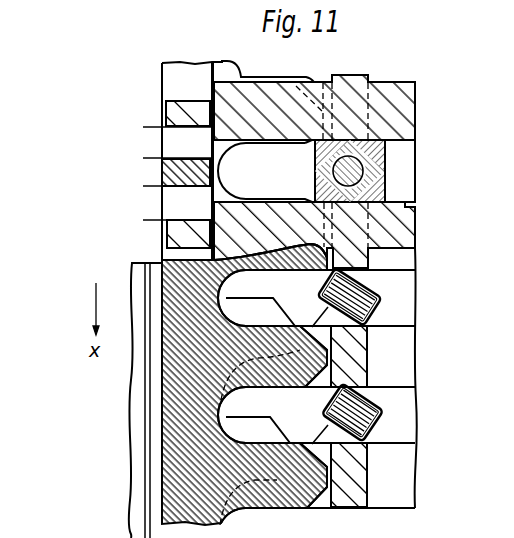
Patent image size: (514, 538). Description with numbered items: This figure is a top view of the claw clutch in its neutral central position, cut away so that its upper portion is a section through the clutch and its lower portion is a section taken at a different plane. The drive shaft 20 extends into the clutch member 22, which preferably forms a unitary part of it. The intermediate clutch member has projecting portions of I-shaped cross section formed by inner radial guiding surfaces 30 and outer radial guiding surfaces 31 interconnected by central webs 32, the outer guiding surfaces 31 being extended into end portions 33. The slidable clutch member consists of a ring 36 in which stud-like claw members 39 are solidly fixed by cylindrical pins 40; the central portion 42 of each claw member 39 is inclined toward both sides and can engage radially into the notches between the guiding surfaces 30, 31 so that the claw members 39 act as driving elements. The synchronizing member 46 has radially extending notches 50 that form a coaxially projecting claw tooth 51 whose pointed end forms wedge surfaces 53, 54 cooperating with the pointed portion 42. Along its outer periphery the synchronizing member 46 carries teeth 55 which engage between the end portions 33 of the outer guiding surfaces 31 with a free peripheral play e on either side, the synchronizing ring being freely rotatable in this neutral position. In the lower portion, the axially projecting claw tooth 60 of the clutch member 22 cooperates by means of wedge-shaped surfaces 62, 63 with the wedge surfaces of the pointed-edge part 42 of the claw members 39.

The drive shaft 20 is at (114, 400).
The clutch member 22 is at (140, 474).
The radial guiding surface 30 is at (420, 271).
The radial guiding surface 31 is at (397, 81).
The central web 32 is at (362, 357).
The extended end portion 33 is at (170, 110).
The ring 36 is at (383, 153).
The claw member 39 is at (386, 297).
The cylindrical pin 40 is at (313, 172).
The central portion 42 is at (407, 354).
The synchronizing member 46 is at (173, 427).
The notch 50 is at (259, 293).
The claw tooth 51 is at (318, 330).
The wedge surface 53 is at (315, 405).
The wedge surface 54 is at (318, 324).
The tooth 55 is at (165, 172).
The claw tooth 60 is at (252, 425).
The wedge-shaped surface 62 is at (287, 509).
The wedge-shaped surface 63 is at (285, 432).
The peripheral play e is at (149, 131).